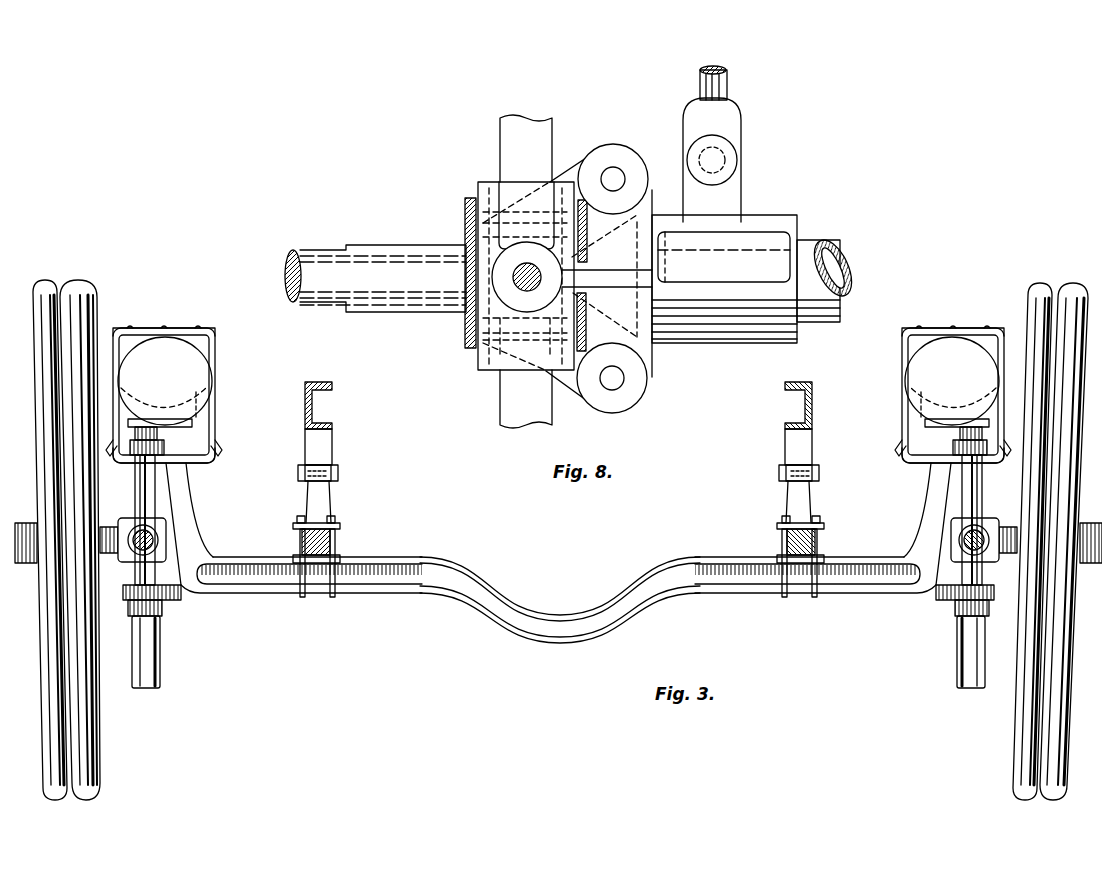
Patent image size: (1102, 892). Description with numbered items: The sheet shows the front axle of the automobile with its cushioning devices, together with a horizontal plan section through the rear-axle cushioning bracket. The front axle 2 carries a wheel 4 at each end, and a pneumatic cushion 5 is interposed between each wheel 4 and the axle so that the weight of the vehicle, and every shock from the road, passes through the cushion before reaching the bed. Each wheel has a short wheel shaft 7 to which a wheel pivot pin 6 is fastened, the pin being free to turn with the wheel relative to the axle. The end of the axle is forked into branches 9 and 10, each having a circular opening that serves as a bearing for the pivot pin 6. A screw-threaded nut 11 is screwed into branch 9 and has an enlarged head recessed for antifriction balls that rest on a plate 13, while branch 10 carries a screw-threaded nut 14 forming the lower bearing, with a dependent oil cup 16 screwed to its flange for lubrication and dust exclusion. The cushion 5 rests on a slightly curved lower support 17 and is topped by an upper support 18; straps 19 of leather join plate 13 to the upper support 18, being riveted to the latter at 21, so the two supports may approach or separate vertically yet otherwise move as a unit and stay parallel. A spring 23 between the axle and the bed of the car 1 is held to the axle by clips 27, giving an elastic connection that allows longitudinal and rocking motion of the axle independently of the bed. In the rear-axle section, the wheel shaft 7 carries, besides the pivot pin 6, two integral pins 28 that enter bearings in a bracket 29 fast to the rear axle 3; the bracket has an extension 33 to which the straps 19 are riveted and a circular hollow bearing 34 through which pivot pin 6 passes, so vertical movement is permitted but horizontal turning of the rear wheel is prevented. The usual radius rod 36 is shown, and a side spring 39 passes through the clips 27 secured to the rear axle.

In FIG. 3, the body of the bed of the car 1 is at (304, 402).
In FIG. 3, the front axle 2 is at (558, 628).
In FIG. 8, the rear axle 3 is at (832, 304).
In FIG. 3, the wheels 4 is at (50, 636).
In FIG. 3, the pneumatic cushion 5 is at (188, 363).
In FIG. 8, the wheel pivot pin 6 is at (527, 277).
In FIG. 3, the wheel pivot pin 6 is at (145, 505).
In FIG. 8, the wheel shaft 7 is at (375, 278).
In FIG. 3, the wheel shaft 7 is at (558, 567).
In FIG. 3, the fork branch 9 is at (192, 535).
In FIG. 3, the fork branch 10 is at (200, 592).
In FIG. 3, the screw-threaded nut 11 is at (165, 445).
In FIG. 3, the plate 13 is at (195, 462).
In FIG. 3, the screw-threaded nut 14 is at (160, 614).
In FIG. 3, the oil cup 16 is at (162, 662).
In FIG. 3, the lower support 17 is at (195, 424).
In FIG. 3, the upper support 18 is at (178, 328).
In FIG. 8, the straps 19 is at (470, 340).
In FIG. 3, the straps 19 is at (218, 372).
In FIG. 3, the rivets 21 is at (205, 326).
In FIG. 3, the spring 23 is at (335, 545).
In FIG. 3, the clips 27 is at (302, 540).
In FIG. 8, the pins 28 is at (620, 168).
In FIG. 8, the bracket 29 is at (742, 277).
In FIG. 8, the extension 33 is at (578, 395).
In FIG. 8, the circular hollow bearing 34 is at (527, 287).
In FIG. 8, the radius rod 36 is at (727, 144).
In FIG. 8, the side spring 39 is at (526, 271).